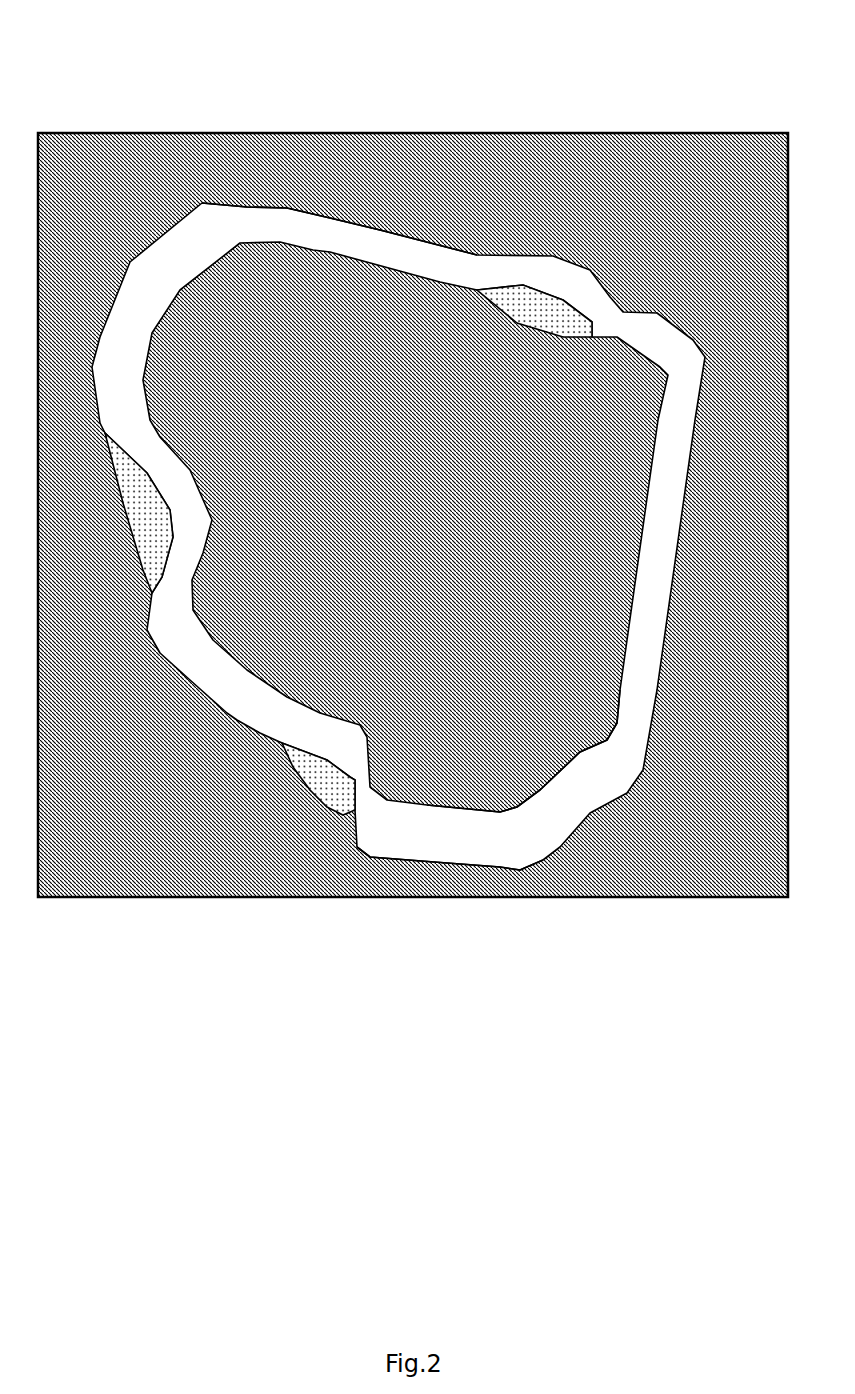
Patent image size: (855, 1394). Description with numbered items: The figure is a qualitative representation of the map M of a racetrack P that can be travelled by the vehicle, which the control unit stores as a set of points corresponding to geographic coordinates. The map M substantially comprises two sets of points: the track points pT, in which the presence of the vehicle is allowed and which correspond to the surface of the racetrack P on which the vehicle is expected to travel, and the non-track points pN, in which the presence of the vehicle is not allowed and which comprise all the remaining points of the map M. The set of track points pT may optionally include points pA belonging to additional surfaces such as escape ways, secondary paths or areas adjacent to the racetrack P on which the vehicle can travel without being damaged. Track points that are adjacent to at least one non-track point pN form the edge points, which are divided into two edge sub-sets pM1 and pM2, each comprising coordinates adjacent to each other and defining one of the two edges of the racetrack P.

The map M is at (666, 130).
The racetrack P is at (597, 790).
The first edge sub-set pM1 is at (282, 205).
The second edge sub-set pM2 is at (490, 810).
The track points pT is at (448, 843).
The additional surface points pA is at (323, 803).
The non-track points pN is at (180, 833).